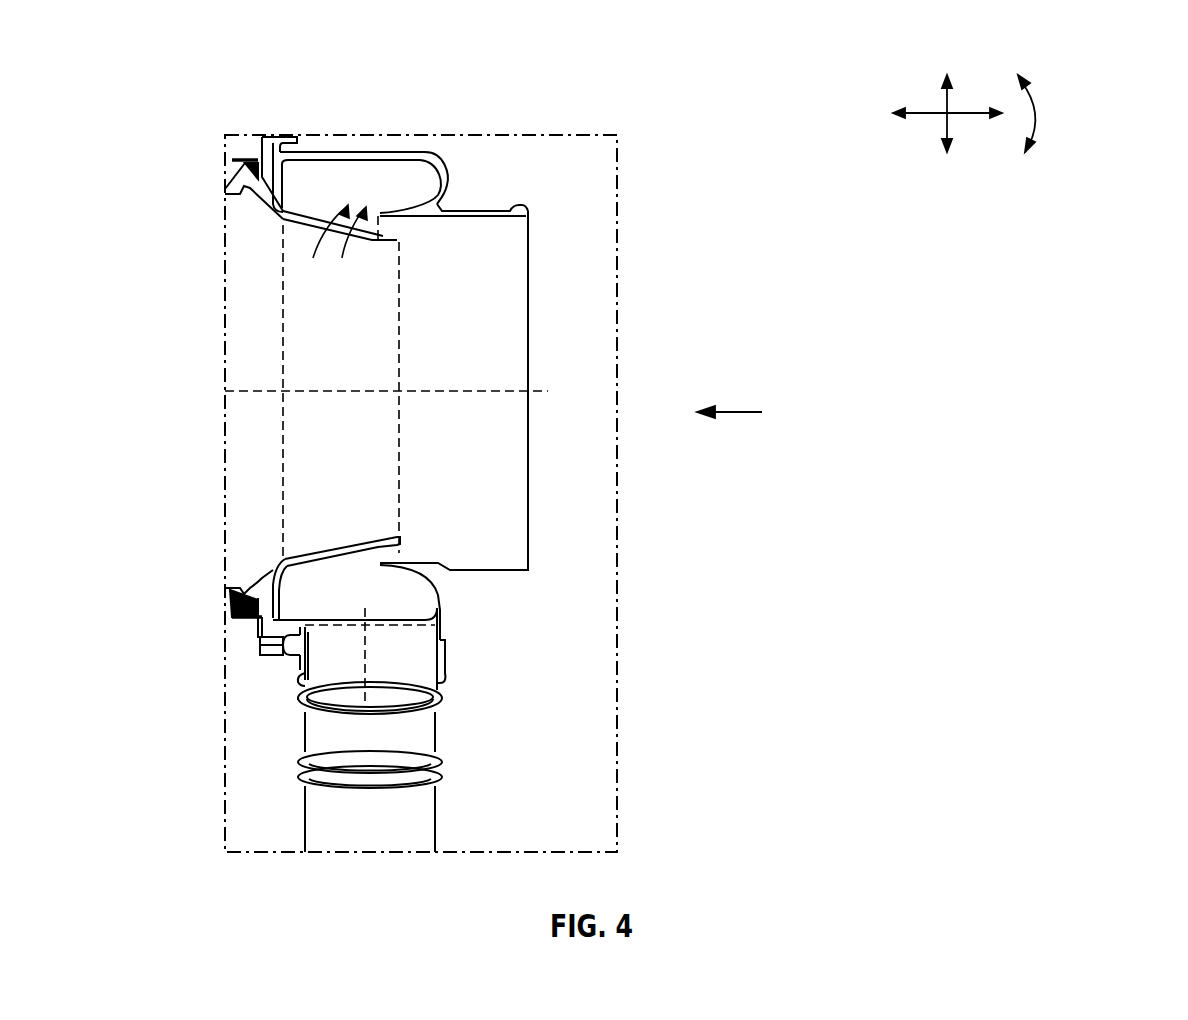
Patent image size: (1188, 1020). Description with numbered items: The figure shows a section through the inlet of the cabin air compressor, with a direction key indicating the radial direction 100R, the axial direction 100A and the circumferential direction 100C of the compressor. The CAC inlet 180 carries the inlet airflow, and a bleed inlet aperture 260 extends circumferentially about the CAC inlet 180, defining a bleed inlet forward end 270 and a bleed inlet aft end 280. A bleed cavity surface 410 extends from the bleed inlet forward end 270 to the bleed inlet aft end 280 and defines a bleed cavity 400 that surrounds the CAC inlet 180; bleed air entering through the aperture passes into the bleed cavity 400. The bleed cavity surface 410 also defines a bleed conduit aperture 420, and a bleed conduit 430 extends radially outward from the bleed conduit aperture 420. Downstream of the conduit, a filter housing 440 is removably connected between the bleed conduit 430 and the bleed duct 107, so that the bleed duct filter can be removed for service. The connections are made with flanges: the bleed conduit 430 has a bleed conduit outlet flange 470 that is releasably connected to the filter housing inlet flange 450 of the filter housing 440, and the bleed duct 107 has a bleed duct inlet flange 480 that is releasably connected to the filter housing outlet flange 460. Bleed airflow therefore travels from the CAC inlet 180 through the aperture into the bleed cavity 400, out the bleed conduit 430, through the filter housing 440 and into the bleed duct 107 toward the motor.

The bleed duct 107 is at (312, 803).
The CAC inlet 180 is at (728, 416).
The bleed inlet aperture 260 is at (345, 233).
The bleed inlet forward end 270 is at (380, 213).
The bleed inlet aft end 280 is at (292, 224).
The bleed cavity 400 is at (340, 249).
The bleed cavity surface 410 is at (382, 155).
The bleed conduit aperture 420 is at (445, 617).
The bleed conduit 430 is at (445, 655).
The filter housing 440 is at (440, 730).
The filter housing inlet flange 450 is at (298, 697).
The filter housing outlet flange 460 is at (298, 763).
The bleed conduit outlet flange 470 is at (445, 690).
The bleed duct inlet flange 480 is at (440, 782).
The radial direction 100R is at (943, 93).
The axial direction 100A is at (925, 115).
The circumferential direction 100C is at (1037, 127).